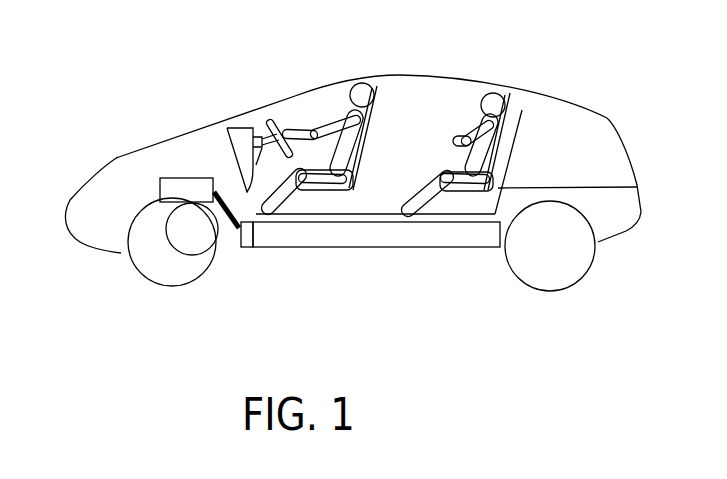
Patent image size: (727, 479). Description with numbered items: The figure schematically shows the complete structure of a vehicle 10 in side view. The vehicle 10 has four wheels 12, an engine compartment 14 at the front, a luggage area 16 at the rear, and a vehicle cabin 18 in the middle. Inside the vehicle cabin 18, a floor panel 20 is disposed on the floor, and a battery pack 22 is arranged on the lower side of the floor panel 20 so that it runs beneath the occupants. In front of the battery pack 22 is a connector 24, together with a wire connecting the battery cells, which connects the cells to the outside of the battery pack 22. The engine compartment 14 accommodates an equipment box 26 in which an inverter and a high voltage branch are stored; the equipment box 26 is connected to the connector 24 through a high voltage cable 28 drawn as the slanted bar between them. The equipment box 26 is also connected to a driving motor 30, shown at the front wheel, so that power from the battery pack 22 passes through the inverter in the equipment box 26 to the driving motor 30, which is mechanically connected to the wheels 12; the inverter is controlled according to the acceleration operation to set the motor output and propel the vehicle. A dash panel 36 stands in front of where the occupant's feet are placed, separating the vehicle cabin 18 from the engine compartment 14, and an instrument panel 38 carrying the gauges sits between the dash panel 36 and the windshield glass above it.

The vehicle 10 is at (351, 132).
The wheels 12 is at (147, 252).
The engine compartment 14 is at (150, 168).
The luggage area 16 is at (592, 155).
The vehicle cabin 18 is at (430, 107).
The floor panel 20 is at (367, 213).
The battery pack 22 is at (360, 240).
The connector 24 is at (248, 248).
The equipment box 26 is at (166, 194).
The high voltage cable 28 is at (238, 228).
The driving motor 30 is at (190, 240).
The dash panel 36 is at (247, 191).
The instrument panel 38 is at (242, 128).